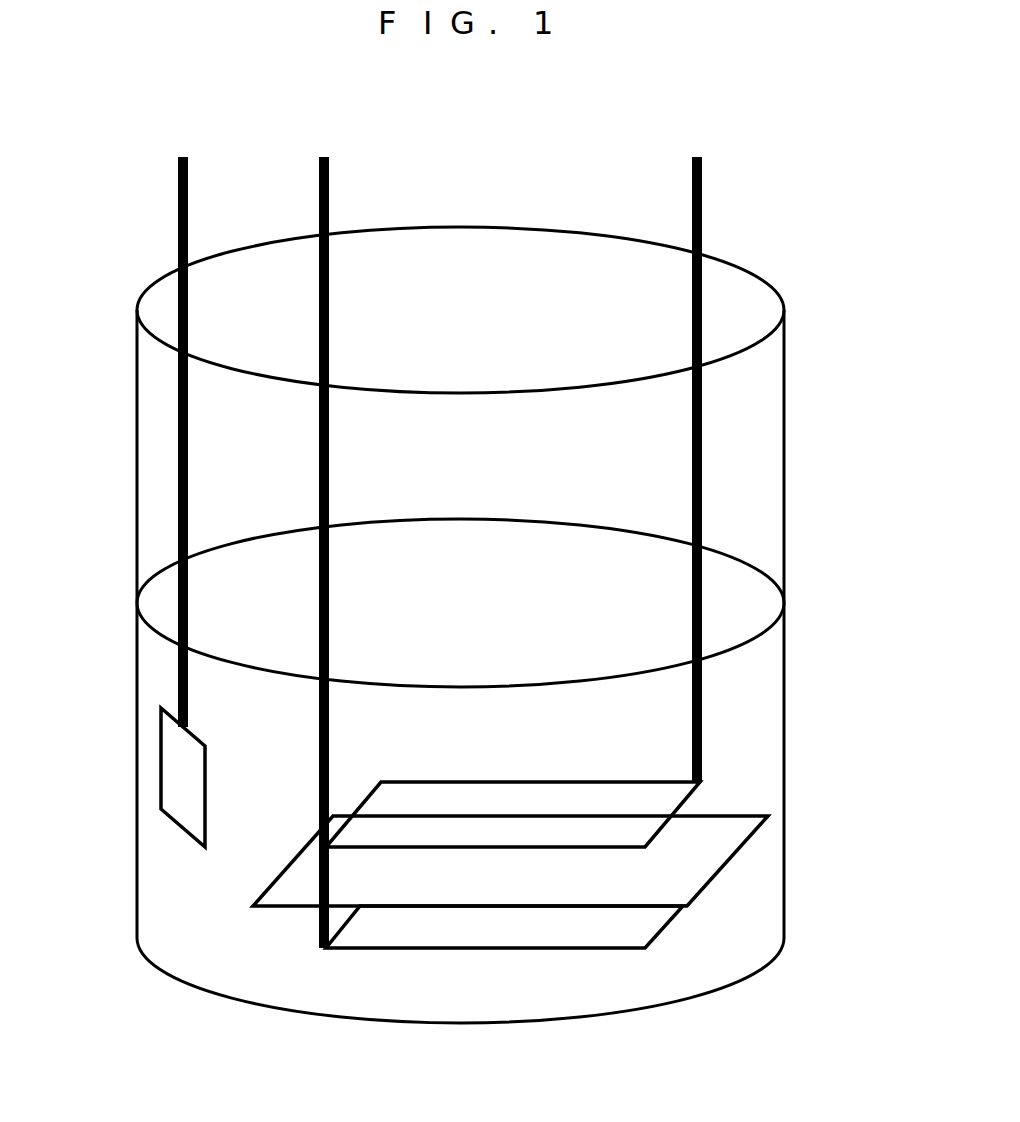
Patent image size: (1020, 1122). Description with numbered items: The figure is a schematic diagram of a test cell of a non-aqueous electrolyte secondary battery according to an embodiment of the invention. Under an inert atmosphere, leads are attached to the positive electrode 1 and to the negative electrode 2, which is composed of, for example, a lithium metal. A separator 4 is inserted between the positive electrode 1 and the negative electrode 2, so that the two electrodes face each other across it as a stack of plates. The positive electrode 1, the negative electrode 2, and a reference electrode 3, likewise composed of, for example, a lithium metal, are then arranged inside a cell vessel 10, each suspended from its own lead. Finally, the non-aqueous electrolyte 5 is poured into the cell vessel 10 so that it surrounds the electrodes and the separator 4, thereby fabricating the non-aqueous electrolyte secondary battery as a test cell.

The positive electrode 1 is at (521, 928).
The negative electrode 2 is at (492, 795).
The reference electrode 3 is at (185, 766).
The separator 4 is at (713, 851).
The non-aqueous electrolyte 5 is at (760, 718).
The cell vessel 10 is at (784, 523).